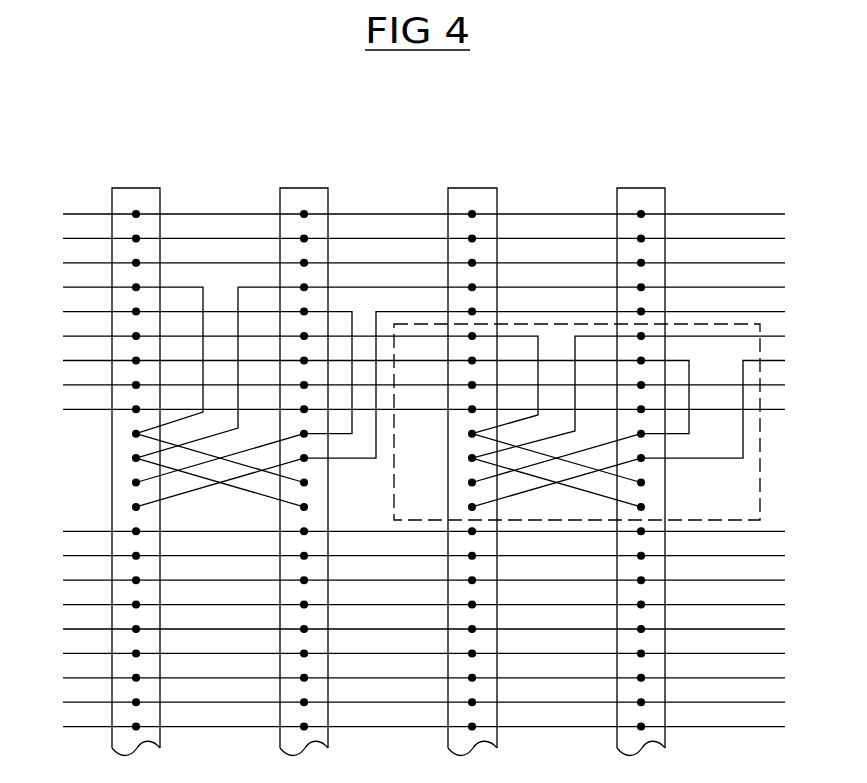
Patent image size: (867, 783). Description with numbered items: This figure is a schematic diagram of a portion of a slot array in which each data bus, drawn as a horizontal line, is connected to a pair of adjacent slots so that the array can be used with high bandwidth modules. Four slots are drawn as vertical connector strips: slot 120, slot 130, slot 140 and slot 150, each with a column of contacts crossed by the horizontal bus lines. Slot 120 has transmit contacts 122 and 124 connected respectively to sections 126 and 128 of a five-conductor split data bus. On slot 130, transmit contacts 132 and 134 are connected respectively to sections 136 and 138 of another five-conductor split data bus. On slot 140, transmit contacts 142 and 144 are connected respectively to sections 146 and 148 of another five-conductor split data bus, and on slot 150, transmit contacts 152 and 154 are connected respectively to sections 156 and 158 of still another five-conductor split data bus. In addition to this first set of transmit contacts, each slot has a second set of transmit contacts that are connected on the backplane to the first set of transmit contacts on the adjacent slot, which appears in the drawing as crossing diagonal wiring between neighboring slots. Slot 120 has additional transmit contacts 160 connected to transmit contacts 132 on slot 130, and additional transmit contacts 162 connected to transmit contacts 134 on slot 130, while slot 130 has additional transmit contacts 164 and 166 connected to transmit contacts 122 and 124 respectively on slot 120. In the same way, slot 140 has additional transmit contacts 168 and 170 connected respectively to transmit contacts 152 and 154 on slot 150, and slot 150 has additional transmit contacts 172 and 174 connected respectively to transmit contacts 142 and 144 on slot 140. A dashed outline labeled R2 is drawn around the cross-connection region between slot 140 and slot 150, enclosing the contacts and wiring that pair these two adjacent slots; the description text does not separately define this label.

The slot 120 is at (130, 188).
The slot 130 is at (298, 188).
The slot 140 is at (466, 188).
The slot 150 is at (635, 188).
The transmit contact 122 is at (136, 434).
The transmit contact 124 is at (136, 458).
The section of five-conductor split data bus 126 is at (77, 287).
The section of five-conductor split data bus 128 is at (777, 287).
The transmit contact 132 is at (306, 434).
The transmit contact 134 is at (306, 458).
The section of five-conductor split data bus 136 is at (77, 312).
The section of five-conductor split data bus 138 is at (777, 312).
The transmit contact 142 is at (472, 434).
The transmit contact 144 is at (472, 458).
The section of five-conductor split data bus 146 is at (77, 336).
The section of five-conductor split data bus 148 is at (777, 336).
The transmit contact 152 is at (643, 434).
The transmit contact 154 is at (643, 458).
The section of five-conductor split data bus 156 is at (77, 360).
The section of five-conductor split data bus 158 is at (777, 360).
The additional transmit contact 160 is at (136, 482).
The additional transmit contact 162 is at (136, 507).
The additional transmit contact 164 is at (304, 482).
The additional transmit contact 166 is at (304, 507).
The additional transmit contact 168 is at (472, 482).
The additional transmit contact 170 is at (472, 507).
The additional transmit contact 172 is at (643, 484).
The additional transmit contact 174 is at (643, 508).
The region of crossed connections R2 is at (760, 480).